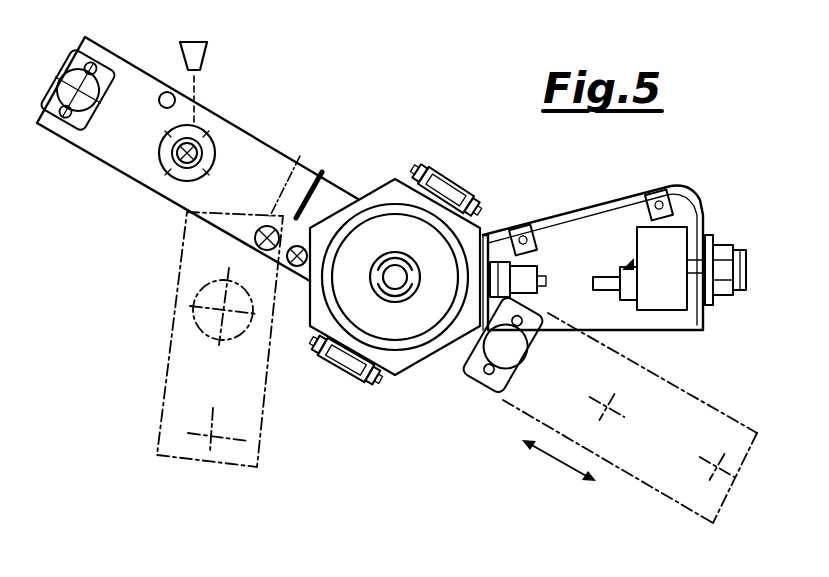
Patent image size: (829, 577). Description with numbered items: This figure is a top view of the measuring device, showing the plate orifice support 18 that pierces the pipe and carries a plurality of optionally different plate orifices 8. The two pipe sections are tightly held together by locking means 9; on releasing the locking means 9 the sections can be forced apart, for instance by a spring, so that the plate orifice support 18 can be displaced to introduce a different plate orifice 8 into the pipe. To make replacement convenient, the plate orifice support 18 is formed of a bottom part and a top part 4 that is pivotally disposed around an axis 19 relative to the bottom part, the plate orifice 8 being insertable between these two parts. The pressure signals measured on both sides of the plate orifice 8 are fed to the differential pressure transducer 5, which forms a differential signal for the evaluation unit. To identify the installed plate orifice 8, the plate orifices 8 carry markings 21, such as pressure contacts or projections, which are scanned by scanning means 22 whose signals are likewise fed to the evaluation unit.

The top part 4 is at (238, 143).
The differential pressure transducer 5 is at (673, 300).
The plate orifice 8 is at (173, 170).
The locking means 9 is at (465, 187).
The plate orifice support 18 is at (311, 157).
The axis 19 is at (272, 252).
The markings 21 is at (193, 138).
The scanning means 22 is at (205, 61).